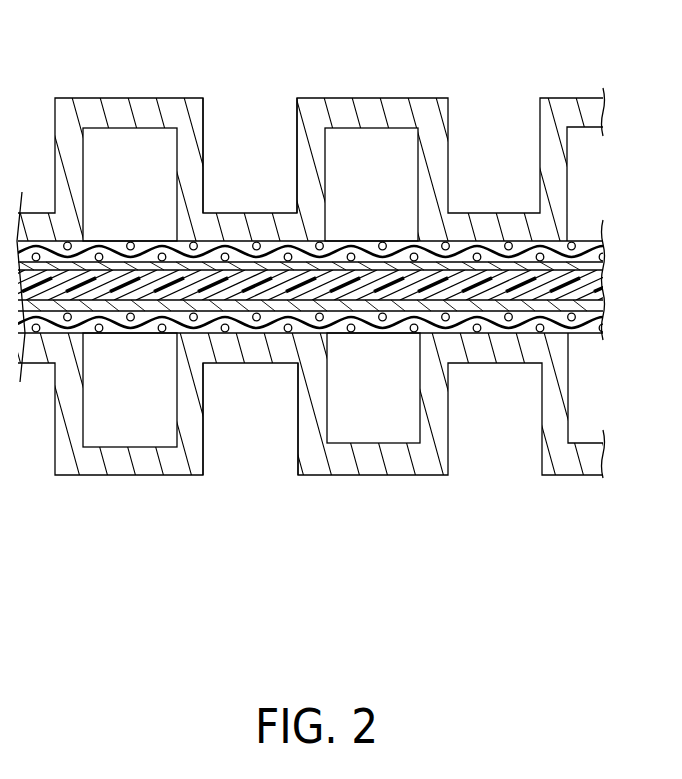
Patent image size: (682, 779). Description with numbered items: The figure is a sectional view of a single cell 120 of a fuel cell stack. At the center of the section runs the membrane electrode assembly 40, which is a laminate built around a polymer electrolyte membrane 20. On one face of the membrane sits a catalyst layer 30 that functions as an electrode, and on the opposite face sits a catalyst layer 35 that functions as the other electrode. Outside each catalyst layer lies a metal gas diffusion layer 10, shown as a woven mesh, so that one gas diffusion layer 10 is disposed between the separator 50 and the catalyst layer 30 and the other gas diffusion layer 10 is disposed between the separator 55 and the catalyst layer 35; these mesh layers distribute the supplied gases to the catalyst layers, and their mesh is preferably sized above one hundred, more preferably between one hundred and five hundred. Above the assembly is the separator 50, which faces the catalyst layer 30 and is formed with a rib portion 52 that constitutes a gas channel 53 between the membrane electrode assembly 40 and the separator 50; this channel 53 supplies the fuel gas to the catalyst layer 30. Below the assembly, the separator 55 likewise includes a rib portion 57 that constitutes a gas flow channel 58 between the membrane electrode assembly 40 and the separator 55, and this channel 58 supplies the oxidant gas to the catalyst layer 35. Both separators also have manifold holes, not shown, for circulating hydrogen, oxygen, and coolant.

The single cell 120 is at (101, 36).
The separator 50 is at (572, 97).
The rib portion 52 is at (463, 212).
The gas channel 53 is at (386, 194).
The separator 55 is at (565, 473).
The rib portion 57 is at (465, 362).
The gas flow channel 58 is at (383, 399).
The metal gas diffusion layer 10 is at (168, 250).
The catalyst layer 30 is at (170, 266).
The polymer electrolyte membrane 20 is at (173, 285).
The catalyst layer 35 is at (176, 305).
The membrane electrode assembly 40 is at (368, 508).